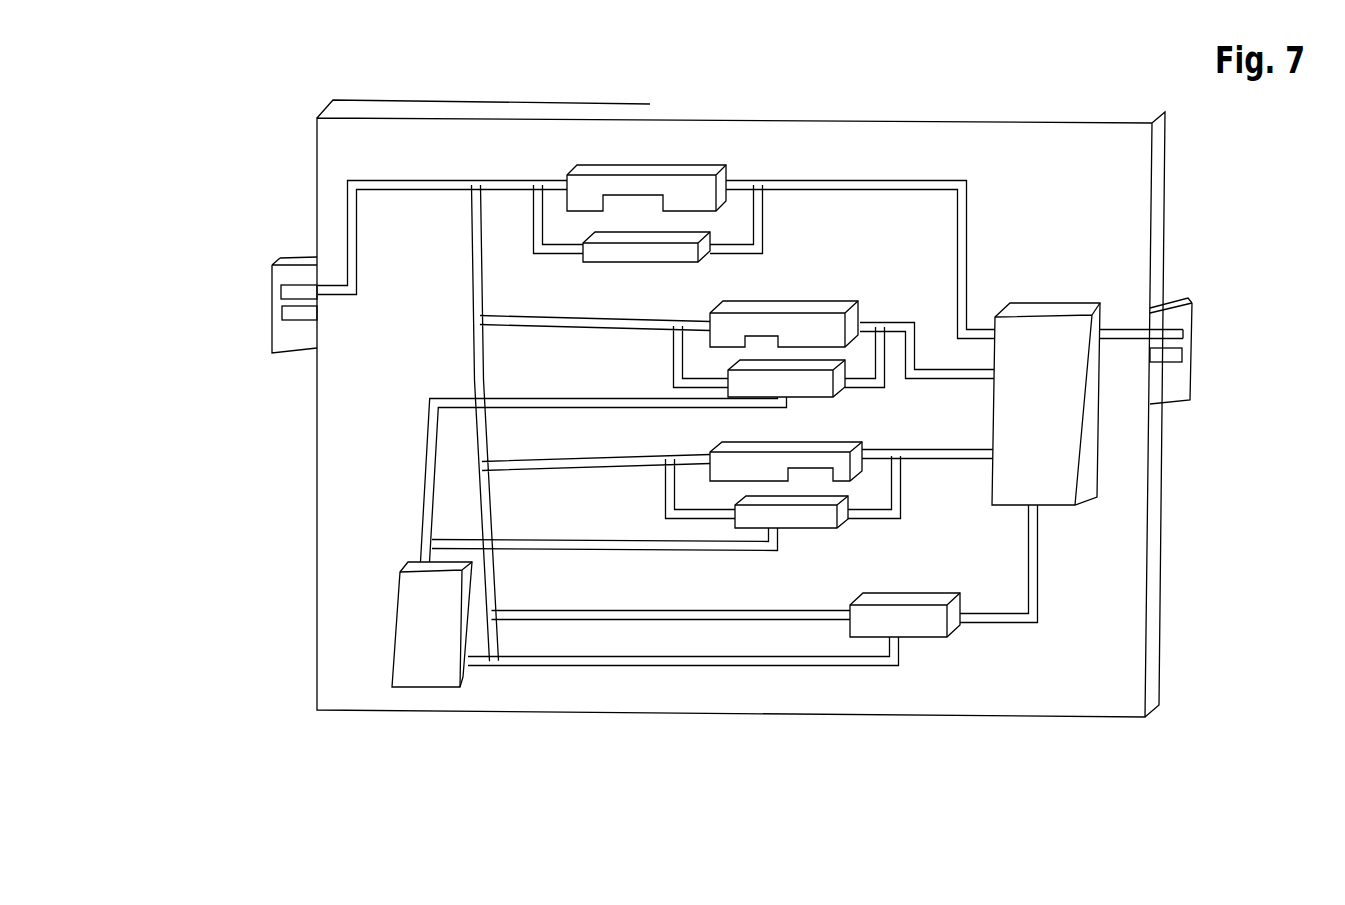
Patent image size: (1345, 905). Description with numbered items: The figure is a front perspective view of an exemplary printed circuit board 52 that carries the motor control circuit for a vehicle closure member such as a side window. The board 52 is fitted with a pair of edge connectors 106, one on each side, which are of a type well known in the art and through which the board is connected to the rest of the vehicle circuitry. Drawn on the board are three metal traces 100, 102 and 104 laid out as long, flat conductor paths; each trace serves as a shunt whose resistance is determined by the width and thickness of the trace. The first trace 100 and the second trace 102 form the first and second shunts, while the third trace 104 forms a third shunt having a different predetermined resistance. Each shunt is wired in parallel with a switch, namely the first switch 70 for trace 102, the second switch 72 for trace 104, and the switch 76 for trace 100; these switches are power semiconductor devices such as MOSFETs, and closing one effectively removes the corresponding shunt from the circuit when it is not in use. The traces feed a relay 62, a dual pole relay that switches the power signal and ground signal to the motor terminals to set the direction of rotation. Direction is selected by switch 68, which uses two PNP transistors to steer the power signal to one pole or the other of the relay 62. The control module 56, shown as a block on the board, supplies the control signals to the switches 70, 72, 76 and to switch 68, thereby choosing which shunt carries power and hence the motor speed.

The printed circuit board 52 is at (1097, 718).
The control module 56 is at (448, 642).
The relay 62 is at (1060, 421).
The switch 68 is at (940, 637).
The first switch 70 is at (806, 398).
The second switch 72 is at (840, 528).
The switch 76 is at (632, 263).
The metal trace 100 is at (645, 165).
The metal trace 102 is at (797, 300).
The metal trace 104 is at (842, 440).
The edge connectors 106 is at (270, 297).